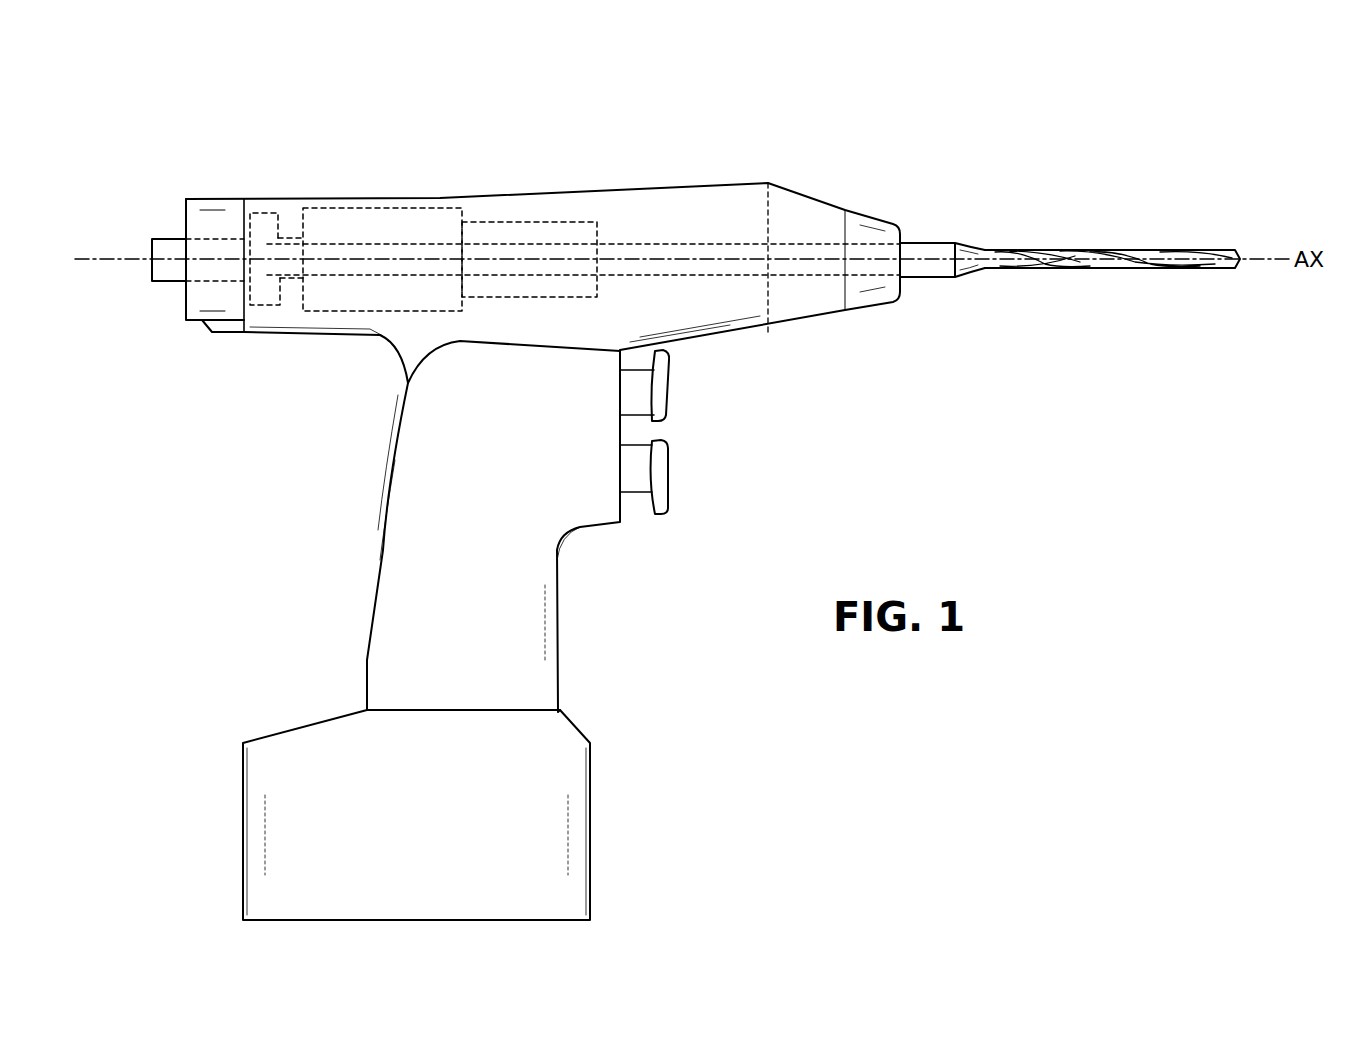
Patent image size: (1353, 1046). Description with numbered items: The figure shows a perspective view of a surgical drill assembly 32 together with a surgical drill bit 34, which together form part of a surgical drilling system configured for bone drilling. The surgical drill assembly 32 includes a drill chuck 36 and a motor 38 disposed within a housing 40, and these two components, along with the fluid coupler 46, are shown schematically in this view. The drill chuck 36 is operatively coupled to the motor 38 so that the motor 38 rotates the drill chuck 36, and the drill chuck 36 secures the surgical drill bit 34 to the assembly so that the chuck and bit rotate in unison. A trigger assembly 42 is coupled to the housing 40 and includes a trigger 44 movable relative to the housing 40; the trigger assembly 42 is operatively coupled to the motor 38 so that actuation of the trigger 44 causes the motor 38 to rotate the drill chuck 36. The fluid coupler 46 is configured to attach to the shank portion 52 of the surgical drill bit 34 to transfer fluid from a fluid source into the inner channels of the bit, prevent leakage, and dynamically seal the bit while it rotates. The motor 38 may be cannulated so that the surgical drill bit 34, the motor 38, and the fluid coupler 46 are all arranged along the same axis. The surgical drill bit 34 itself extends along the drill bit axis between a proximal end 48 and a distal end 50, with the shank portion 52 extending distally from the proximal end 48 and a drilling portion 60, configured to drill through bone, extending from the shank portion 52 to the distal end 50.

The surgical drill assembly 32 is at (354, 152).
The surgical drill bit 34 is at (922, 236).
The drill chuck 36 is at (525, 222).
The motor 38 is at (392, 208).
The housing 40 is at (650, 212).
The trigger assembly 42 is at (691, 438).
The trigger 44 is at (666, 390).
The fluid coupler 46 is at (165, 237).
The proximal end 48 is at (266, 213).
The distal end 50 is at (1242, 255).
The shank portion 52 is at (423, 243).
The drilling portion 60 is at (1088, 250).